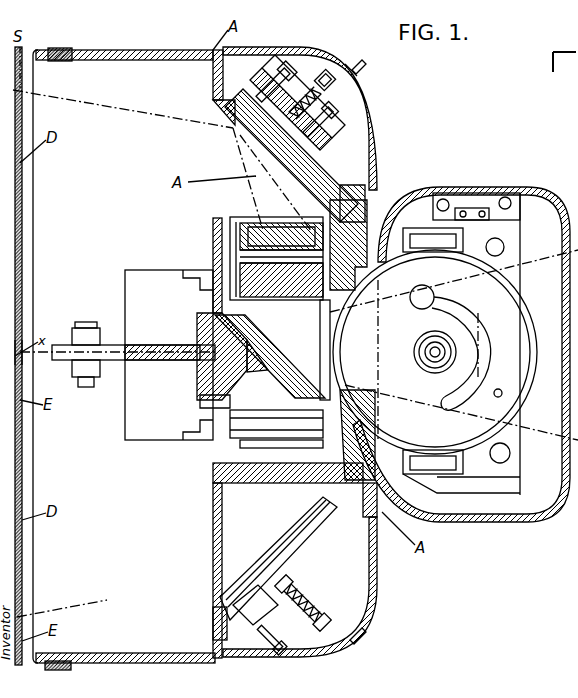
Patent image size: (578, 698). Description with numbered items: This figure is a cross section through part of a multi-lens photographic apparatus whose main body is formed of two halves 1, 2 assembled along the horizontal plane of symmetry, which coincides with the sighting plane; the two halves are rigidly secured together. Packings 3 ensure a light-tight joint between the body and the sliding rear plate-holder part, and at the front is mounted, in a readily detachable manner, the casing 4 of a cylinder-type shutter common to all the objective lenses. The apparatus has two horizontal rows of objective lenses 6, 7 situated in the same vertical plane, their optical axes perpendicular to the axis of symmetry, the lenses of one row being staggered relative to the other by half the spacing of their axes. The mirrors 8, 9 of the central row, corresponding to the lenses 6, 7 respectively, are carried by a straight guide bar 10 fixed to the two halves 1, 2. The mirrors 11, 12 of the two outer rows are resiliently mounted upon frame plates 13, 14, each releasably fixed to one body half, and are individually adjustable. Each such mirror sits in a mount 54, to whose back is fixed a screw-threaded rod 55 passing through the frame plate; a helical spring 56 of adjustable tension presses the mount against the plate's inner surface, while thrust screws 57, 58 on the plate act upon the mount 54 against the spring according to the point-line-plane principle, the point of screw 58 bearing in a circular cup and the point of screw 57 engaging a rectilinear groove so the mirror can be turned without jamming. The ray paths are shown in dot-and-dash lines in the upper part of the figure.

The half of main body 1 is at (236, 226).
The half of main body 2 is at (213, 473).
The packings 3 is at (58, 50).
The casing of shutter 4 is at (538, 200).
The objective lenses 6 is at (256, 232).
The objective lenses 7 is at (242, 420).
The mirror 8 is at (205, 312).
The mirror 9 is at (205, 392).
The guide bar 10 is at (205, 330).
The mirror 11 is at (236, 132).
The mirror 12 is at (262, 557).
The frame plate 13 is at (315, 152).
The frame plate 14 is at (325, 560).
The mount 54 is at (348, 190).
The screw-threaded rod 55 is at (332, 78).
The helical spring 56 is at (298, 95).
The thrust screw 57 is at (275, 70).
The thrust screw 58 is at (330, 112).